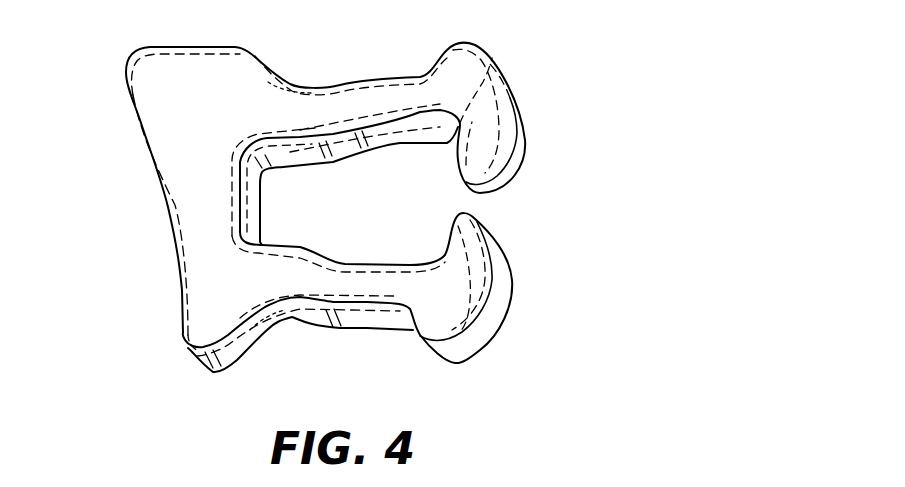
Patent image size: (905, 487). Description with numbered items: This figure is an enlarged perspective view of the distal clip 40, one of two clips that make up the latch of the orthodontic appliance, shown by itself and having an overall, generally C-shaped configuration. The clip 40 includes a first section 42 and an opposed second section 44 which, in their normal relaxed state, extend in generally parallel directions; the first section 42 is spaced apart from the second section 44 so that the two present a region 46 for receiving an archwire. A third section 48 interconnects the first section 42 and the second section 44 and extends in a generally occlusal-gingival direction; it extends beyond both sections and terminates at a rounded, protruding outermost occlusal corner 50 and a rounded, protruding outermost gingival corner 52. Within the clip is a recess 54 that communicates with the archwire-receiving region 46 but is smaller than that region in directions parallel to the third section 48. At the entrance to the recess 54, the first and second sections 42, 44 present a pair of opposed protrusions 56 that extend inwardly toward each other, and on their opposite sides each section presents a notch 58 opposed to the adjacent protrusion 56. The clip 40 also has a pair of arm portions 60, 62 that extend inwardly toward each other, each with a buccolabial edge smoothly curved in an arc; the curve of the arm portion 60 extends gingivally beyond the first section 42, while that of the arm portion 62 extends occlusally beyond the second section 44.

The distal clip 40 is at (375, 328).
The first section 42 is at (350, 106).
The second section 44 is at (350, 323).
The region for receiving an archwire 46 is at (390, 265).
The third section 48 is at (193, 205).
The outermost occlusal corner 50 is at (190, 352).
The outermost gingival corner 52 is at (130, 58).
The recess 54 is at (277, 169).
The protrusions 56 is at (333, 163).
The notch 58 is at (297, 85).
The arm portion 60 is at (490, 95).
The arm portion 62 is at (500, 312).